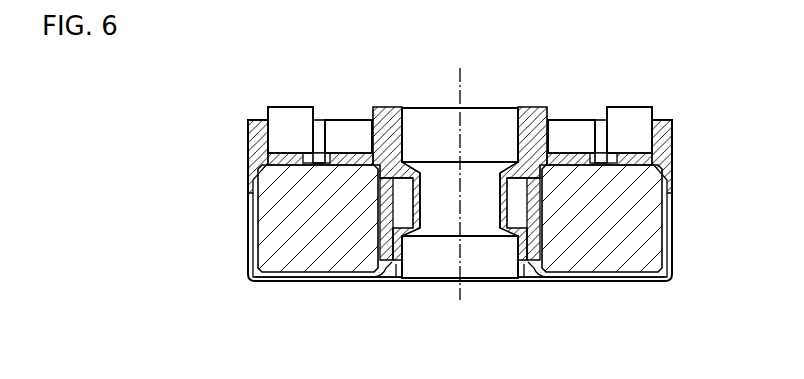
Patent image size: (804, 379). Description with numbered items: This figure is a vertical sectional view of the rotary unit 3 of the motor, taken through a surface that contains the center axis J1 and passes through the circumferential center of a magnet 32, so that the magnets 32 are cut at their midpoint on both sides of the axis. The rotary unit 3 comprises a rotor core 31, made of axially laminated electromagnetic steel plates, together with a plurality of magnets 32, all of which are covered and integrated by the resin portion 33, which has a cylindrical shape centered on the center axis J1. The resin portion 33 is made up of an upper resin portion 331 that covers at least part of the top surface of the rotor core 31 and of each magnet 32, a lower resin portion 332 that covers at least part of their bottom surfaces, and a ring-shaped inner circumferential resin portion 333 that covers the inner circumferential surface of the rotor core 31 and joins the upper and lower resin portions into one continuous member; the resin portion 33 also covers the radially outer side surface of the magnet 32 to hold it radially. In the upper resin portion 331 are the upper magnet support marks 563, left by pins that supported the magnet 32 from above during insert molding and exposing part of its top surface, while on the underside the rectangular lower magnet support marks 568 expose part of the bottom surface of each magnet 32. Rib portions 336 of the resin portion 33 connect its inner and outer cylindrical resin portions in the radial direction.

The rotary unit 3 is at (270, 57).
The rotor core 31 is at (539, 111).
The magnet 32 is at (328, 258).
The resin portion 33 is at (680, 100).
The upper resin portion 331 is at (357, 152).
The lower resin portion 332 is at (368, 283).
The inner circumferential resin portion 333 is at (420, 192).
The rib portion 336 is at (527, 180).
The upper magnet support mark 563 is at (601, 148).
The lower magnet support mark 568 is at (610, 286).
The center axis J1 is at (459, 74).